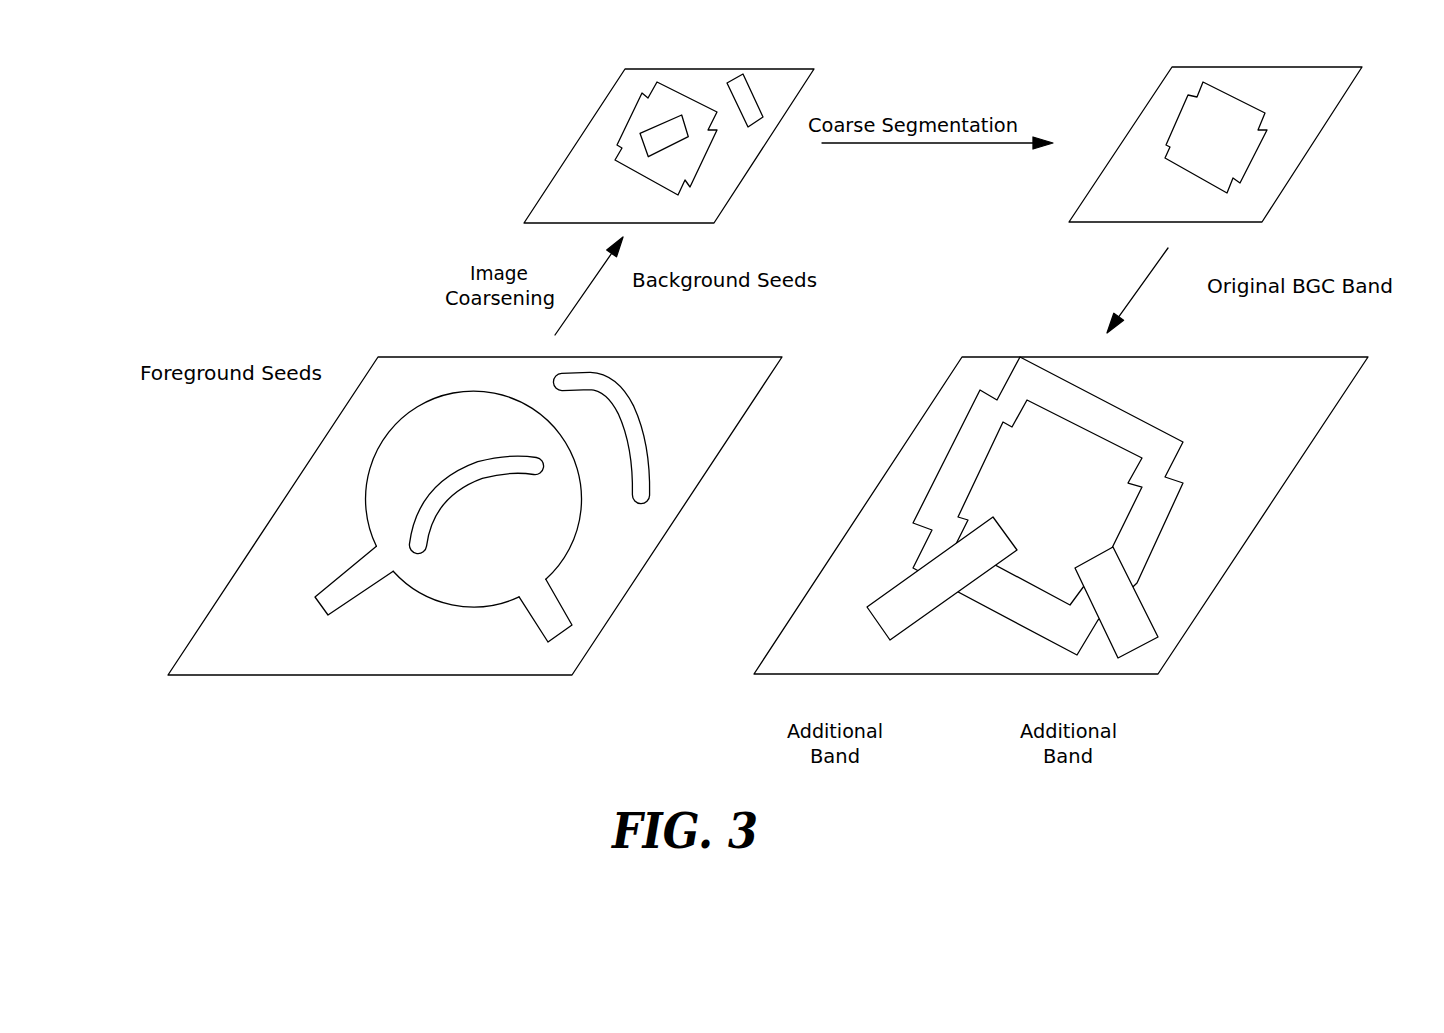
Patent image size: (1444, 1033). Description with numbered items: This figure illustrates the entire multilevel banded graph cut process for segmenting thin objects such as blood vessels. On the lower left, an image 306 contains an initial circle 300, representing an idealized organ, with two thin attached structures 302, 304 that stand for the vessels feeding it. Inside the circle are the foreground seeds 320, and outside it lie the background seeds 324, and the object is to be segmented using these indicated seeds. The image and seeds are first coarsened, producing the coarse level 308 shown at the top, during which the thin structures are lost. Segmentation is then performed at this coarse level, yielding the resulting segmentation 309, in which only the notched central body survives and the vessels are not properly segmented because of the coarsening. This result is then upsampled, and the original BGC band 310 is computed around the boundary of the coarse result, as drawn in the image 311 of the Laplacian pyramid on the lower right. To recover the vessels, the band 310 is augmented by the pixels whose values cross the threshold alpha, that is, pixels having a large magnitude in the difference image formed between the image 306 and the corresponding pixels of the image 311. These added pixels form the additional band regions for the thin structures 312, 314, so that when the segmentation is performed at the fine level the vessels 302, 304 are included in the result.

The initial circle 300 is at (468, 575).
The thin attached structure 302 is at (337, 588).
The thin attached structure 304 is at (535, 622).
The image 306 is at (339, 469).
The coarse level 308 is at (569, 118).
The resulting segmentation 309 is at (1340, 103).
The original BGC band 310 is at (1137, 435).
The image of the Laplacian pyramid 311 is at (1253, 455).
The thin structure 312 is at (1123, 622).
The thin structure 314 is at (888, 615).
The foreground seeds 320 is at (435, 487).
The background seeds 324 is at (618, 397).